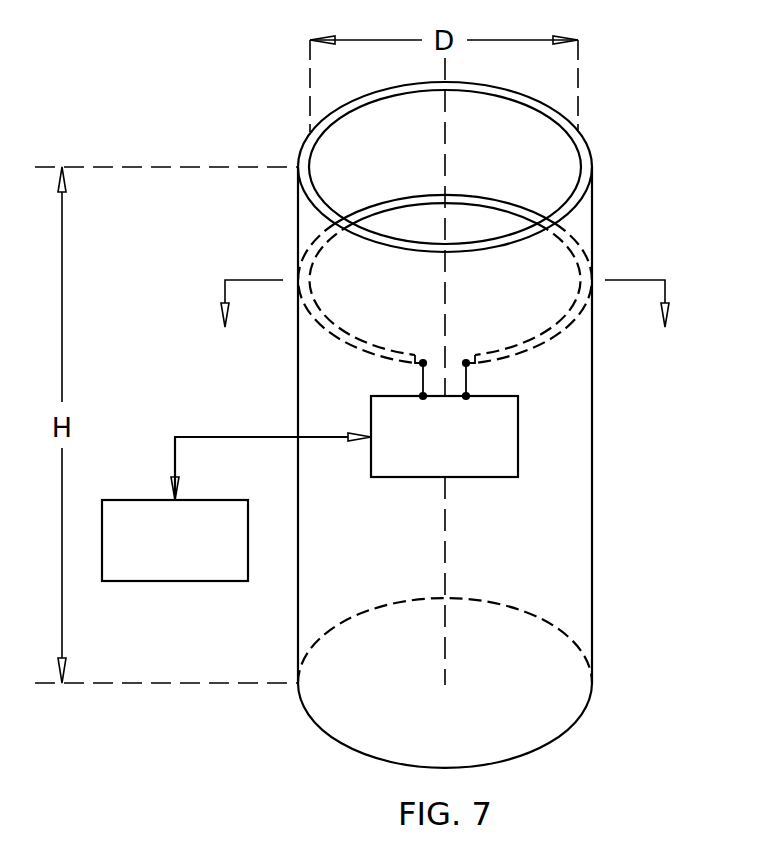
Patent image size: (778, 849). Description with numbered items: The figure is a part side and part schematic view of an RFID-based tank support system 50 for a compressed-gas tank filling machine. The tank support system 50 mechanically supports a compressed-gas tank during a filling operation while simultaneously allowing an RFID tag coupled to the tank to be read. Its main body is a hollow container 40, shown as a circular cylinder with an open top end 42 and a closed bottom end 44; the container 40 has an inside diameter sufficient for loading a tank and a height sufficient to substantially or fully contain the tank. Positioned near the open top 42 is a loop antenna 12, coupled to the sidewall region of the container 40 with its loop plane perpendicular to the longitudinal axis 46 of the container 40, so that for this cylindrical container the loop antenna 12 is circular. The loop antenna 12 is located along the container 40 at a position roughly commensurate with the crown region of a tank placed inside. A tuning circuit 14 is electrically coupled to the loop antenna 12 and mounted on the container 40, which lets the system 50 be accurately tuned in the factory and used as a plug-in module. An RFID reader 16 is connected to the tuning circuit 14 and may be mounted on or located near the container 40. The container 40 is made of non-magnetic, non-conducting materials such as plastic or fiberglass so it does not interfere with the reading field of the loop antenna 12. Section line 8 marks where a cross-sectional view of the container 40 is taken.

The RFID-based tank support system 50 is at (263, 108).
The container 40 is at (592, 517).
The open top end 42 is at (475, 82).
The closed bottom end 44 is at (557, 737).
The longitudinal axis 46 is at (445, 558).
The loop antenna 12 is at (513, 205).
The tuning circuit 14 is at (518, 433).
The RFID reader 16 is at (160, 581).
The section line 8- 8 is at (445, 319).